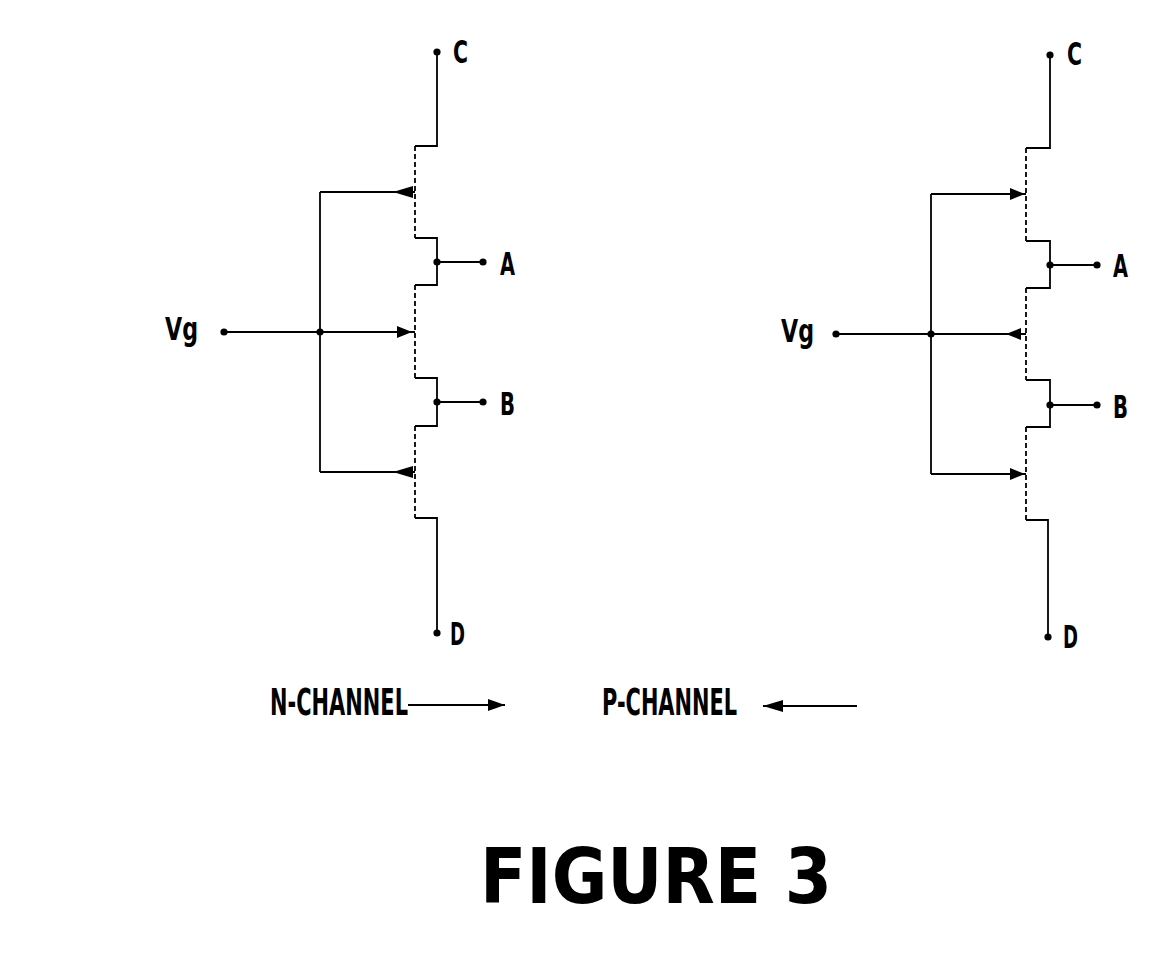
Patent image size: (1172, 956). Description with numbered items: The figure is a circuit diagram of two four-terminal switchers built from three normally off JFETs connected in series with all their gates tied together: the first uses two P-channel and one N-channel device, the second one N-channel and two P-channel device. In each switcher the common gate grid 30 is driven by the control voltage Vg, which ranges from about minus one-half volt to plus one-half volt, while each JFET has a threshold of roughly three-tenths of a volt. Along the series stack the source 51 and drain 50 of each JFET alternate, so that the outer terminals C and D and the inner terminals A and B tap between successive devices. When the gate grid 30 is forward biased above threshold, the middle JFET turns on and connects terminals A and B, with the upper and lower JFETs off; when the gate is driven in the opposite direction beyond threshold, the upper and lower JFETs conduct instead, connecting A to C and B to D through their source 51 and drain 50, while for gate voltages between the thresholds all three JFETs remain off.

The gate grid 30 is at (623, 333).
The drain 50 is at (755, 427).
The source 51 is at (752, 248).